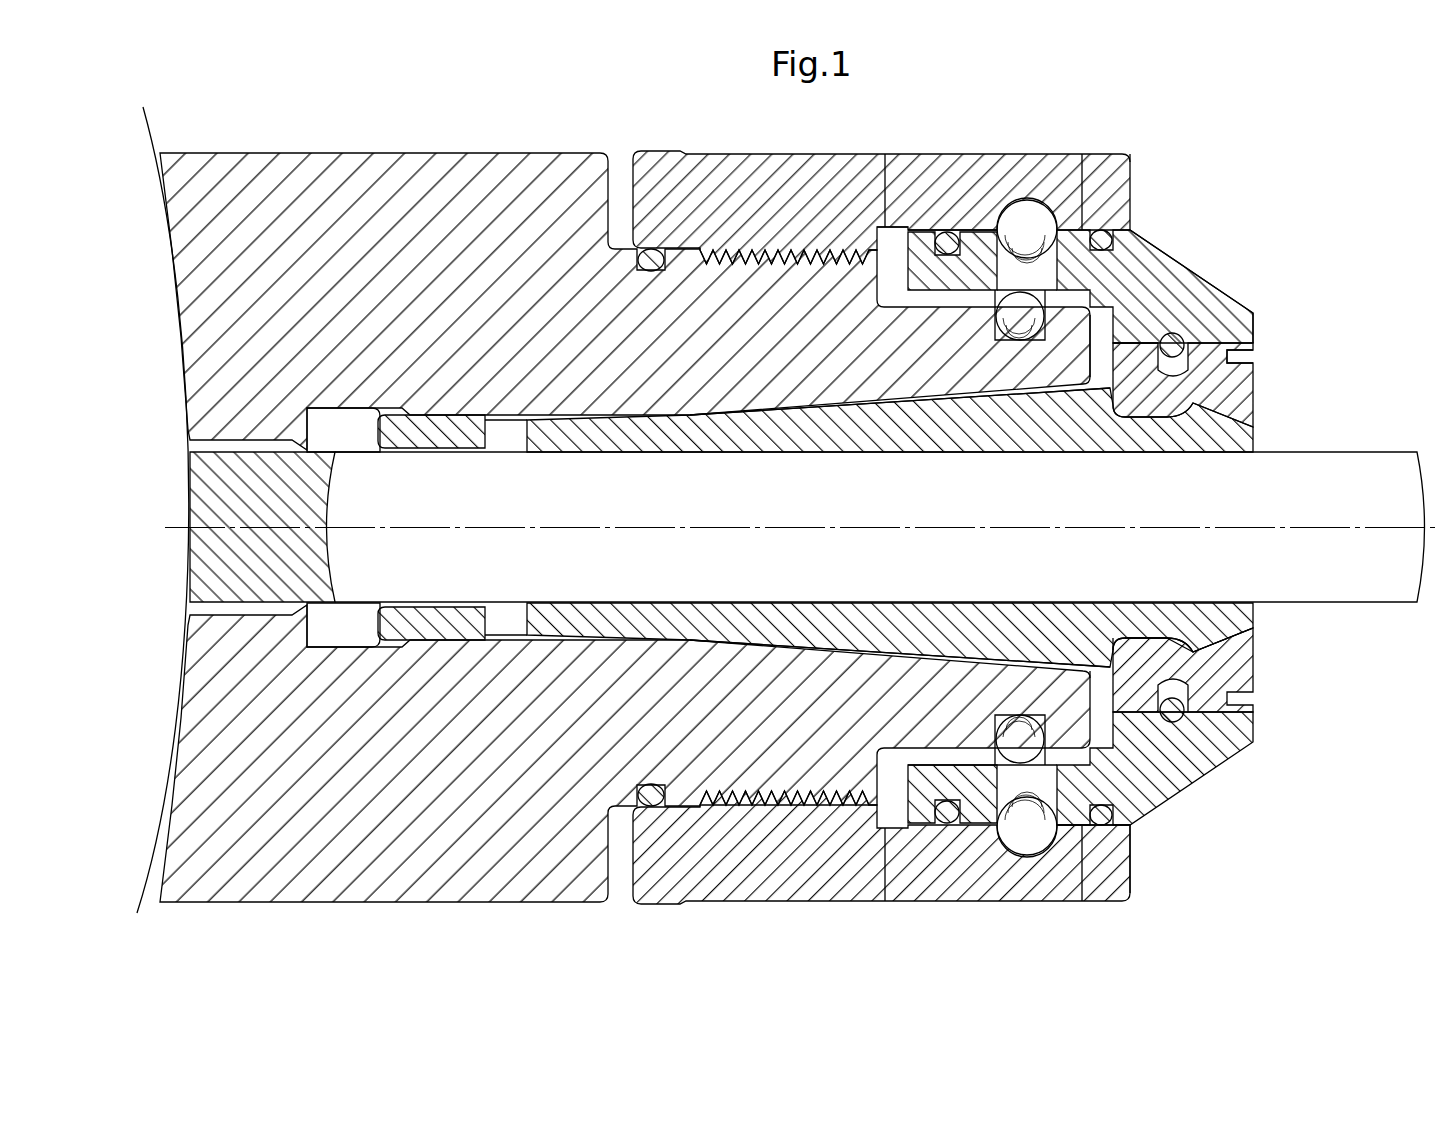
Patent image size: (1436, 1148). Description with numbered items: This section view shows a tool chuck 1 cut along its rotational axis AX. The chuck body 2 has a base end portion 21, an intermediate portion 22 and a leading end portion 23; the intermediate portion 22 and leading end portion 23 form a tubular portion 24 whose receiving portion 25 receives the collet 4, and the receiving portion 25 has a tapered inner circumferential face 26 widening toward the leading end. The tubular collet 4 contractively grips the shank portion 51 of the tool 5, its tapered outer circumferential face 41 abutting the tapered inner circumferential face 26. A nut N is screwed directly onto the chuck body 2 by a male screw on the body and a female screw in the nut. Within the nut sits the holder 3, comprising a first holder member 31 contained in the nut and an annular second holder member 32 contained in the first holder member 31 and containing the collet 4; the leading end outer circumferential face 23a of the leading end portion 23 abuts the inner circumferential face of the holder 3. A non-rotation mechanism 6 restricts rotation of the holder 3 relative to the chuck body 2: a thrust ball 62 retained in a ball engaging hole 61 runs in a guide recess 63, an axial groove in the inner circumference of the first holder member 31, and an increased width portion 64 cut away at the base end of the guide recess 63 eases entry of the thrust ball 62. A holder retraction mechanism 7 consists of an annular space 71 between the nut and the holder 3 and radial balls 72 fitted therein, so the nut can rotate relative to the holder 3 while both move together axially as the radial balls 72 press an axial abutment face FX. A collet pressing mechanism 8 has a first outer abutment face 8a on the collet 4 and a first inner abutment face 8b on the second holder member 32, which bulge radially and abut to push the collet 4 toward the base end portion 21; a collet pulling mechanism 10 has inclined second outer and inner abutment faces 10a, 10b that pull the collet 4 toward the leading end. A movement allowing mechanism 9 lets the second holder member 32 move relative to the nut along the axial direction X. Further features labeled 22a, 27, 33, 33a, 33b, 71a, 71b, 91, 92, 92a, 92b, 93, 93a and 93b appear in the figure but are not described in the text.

The tool chuck 1 is at (1344, 168).
The chuck body 2 is at (300, 146).
The base end portion 21 is at (390, 898).
The intermediate portion 22 is at (881, 854).
The threaded portion 22a is at (738, 808).
The leading end portion 23 is at (1067, 548).
The leading end outer circumferential face 23a is at (944, 753).
The tubular portion 24 is at (941, 520).
The receiving portion 25 is at (900, 778).
The tapered inner circumferential face 26 is at (823, 622).
The end face 27 is at (1094, 372).
The holder 3 is at (1241, 471).
The first holder member 31 is at (1216, 288).
The second holder member 32 is at (1256, 390).
The support ring 33 is at (1155, 474).
The first support ring 33a is at (1084, 233).
The second support ring 33b is at (1103, 395).
The collet 4 is at (1258, 438).
The tapered outer circumferential face 41 is at (910, 365).
The tool 5 is at (1358, 446).
The shank portion 51 is at (624, 460).
The non-rotation mechanism 6 is at (1003, 300).
The ball engaging hole 61 is at (1010, 340).
The thrust ball 62 is at (1000, 228).
The guide recess 63 is at (968, 222).
The increased width portion 64 is at (893, 230).
The holder retraction mechanism 7 is at (1030, 866).
The annular space 71 is at (1228, 858).
The first raceway surface 71a is at (1127, 893).
The second raceway surface 71b is at (1110, 853).
The radial balls 72 is at (1032, 204).
The collet pressing mechanism 8 is at (1137, 575).
The first outer abutment face 8a is at (1138, 636).
The first inner abutment face 8b is at (1098, 632).
The movement allowing mechanism 9 is at (1182, 298).
The first seal ring 91 is at (1150, 332).
The second seal ring 92 is at (1176, 726).
The seal contact surface 92a is at (1220, 748).
The seal groove 92b is at (1180, 700).
The seal holder 93 is at (1229, 354).
The holder inner surface 93a is at (1212, 348).
The holder protrusion 93b is at (1256, 356).
The collet pulling mechanism 10 is at (1260, 575).
The second outer abutment face 10a is at (1162, 650).
The second inner abutment face 10b is at (1205, 640).